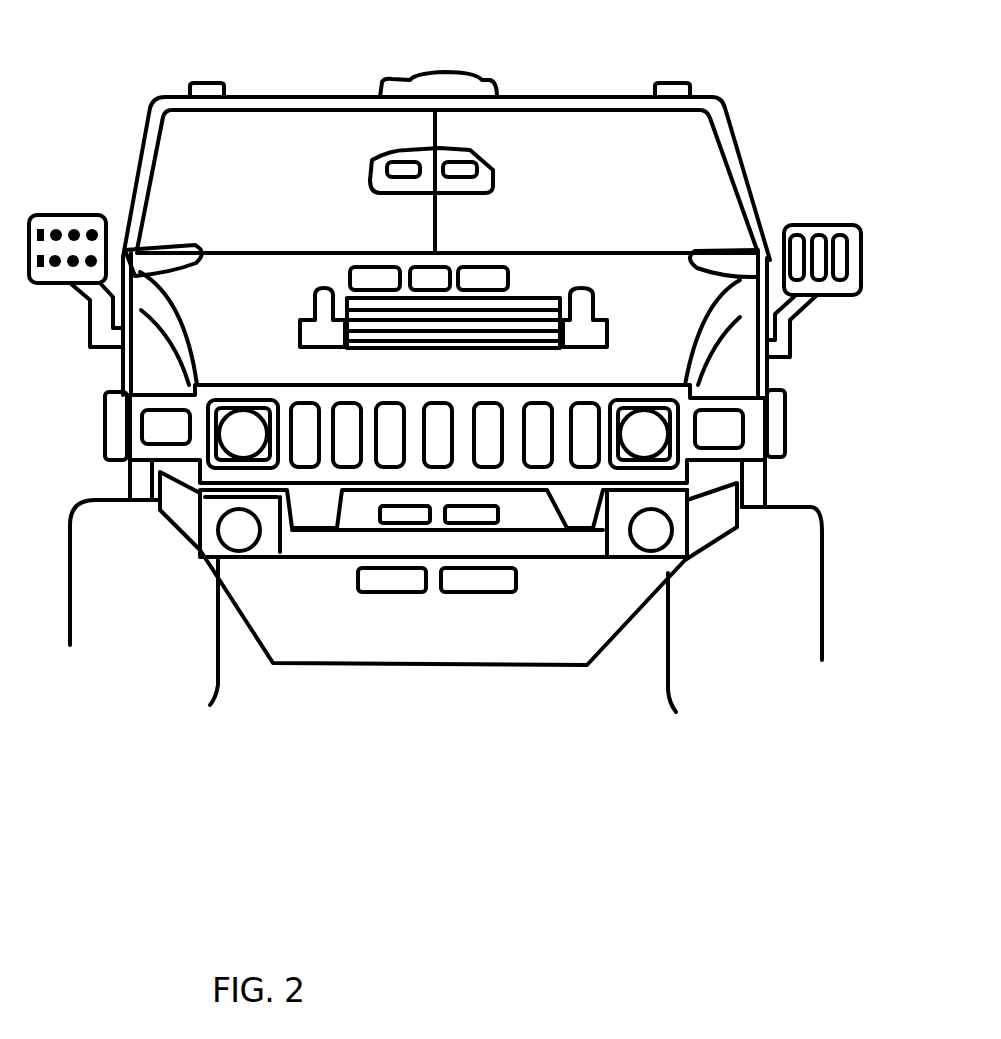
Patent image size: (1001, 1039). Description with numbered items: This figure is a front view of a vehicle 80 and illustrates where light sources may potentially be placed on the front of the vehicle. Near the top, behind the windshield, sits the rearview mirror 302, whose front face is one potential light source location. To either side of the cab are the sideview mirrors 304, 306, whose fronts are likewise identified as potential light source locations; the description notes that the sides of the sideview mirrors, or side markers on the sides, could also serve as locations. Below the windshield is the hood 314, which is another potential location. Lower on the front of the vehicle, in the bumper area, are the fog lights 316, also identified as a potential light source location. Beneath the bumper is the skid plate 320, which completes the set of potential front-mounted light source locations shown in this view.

The vehicle 80 is at (506, 392).
The rearview mirror 302 is at (468, 190).
The sideview mirror 304 is at (75, 238).
The sideview mirror 306 is at (814, 240).
The hood 314 is at (404, 228).
The fog lights 316 is at (267, 571).
The skid plate 320 is at (474, 679).